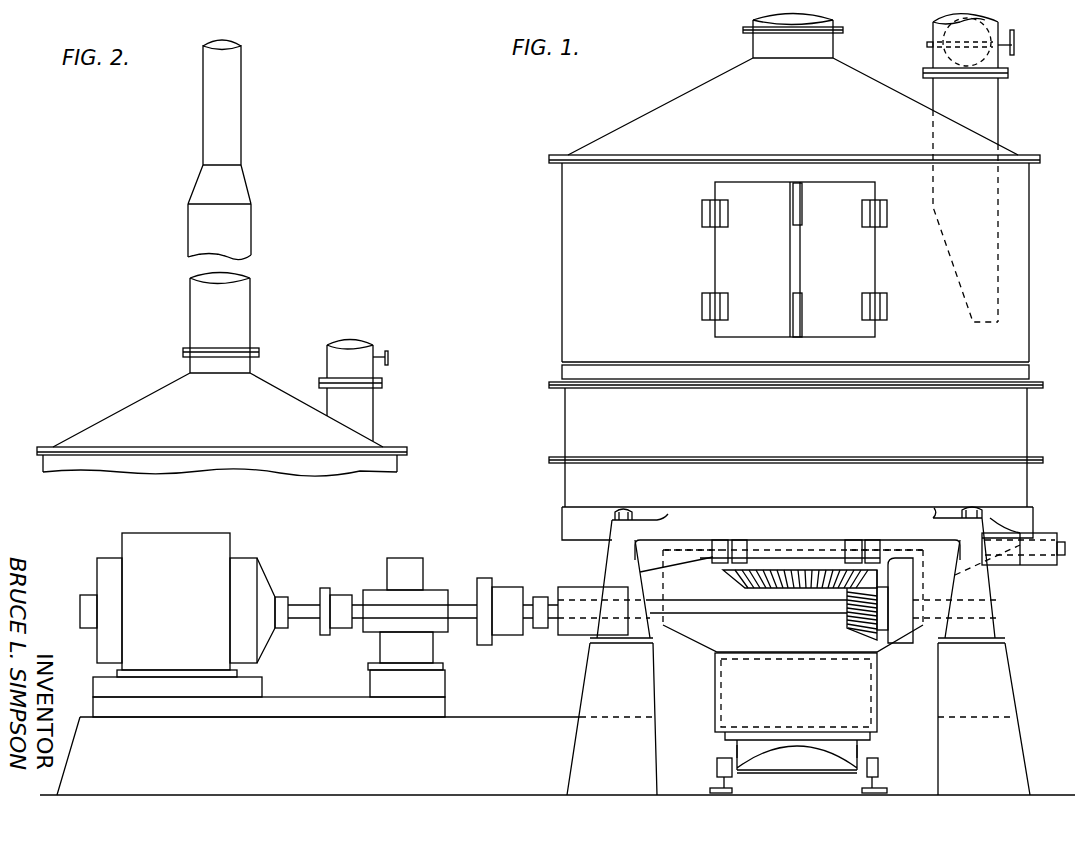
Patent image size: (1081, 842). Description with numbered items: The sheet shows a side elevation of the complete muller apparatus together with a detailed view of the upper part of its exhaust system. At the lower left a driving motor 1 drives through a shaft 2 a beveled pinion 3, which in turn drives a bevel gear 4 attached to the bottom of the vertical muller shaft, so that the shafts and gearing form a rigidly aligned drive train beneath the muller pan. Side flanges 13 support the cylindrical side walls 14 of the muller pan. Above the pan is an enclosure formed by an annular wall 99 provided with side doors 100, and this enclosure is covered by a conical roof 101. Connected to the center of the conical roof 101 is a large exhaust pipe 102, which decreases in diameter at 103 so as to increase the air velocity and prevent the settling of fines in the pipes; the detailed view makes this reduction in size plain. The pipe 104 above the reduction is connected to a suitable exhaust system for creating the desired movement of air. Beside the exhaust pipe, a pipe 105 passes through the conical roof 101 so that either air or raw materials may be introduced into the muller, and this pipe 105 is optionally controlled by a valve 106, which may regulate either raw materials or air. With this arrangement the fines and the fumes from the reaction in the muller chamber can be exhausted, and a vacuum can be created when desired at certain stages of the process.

In FIG. 1, the driving motor 1 is at (143, 541).
In FIG. 1, the shaft 2 is at (713, 613).
In FIG. 1, the beveled pinion 3 is at (845, 628).
In FIG. 1, the bevel gear 4 is at (733, 575).
In FIG. 1, the side flanges 13 is at (562, 523).
In FIG. 1, the cylindrical side walls 14 is at (565, 422).
In FIG. 2, the annular wall 99 is at (395, 466).
In FIG. 1, the annular wall 99 is at (570, 215).
In FIG. 1, the side doors 100 is at (720, 258).
In FIG. 2, the conical roof 101 is at (152, 401).
In FIG. 1, the conical roof 101 is at (703, 91).
In FIG. 2, the exhaust pipe 102 is at (190, 325).
In FIG. 1, the exhaust pipe 102 is at (760, 42).
In FIG. 2, the reduction in diameter 103 is at (240, 190).
In FIG. 2, the pipe 104 is at (237, 133).
In FIG. 2, the pipe 105 is at (375, 418).
In FIG. 1, the pipe 105 is at (993, 113).
In FIG. 2, the valve 106 is at (390, 357).
In FIG. 1, the valve 106 is at (1013, 52).